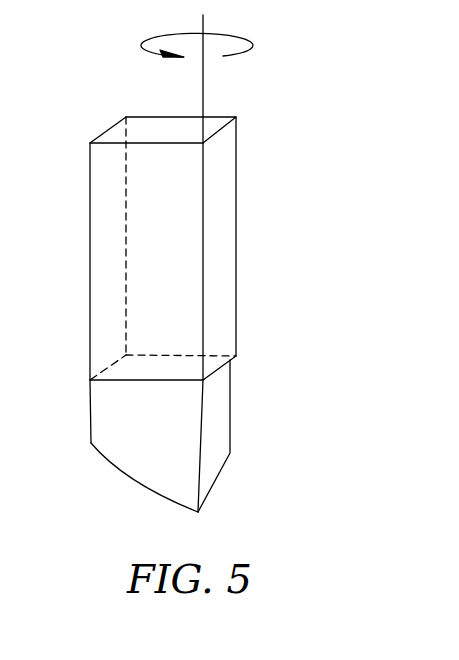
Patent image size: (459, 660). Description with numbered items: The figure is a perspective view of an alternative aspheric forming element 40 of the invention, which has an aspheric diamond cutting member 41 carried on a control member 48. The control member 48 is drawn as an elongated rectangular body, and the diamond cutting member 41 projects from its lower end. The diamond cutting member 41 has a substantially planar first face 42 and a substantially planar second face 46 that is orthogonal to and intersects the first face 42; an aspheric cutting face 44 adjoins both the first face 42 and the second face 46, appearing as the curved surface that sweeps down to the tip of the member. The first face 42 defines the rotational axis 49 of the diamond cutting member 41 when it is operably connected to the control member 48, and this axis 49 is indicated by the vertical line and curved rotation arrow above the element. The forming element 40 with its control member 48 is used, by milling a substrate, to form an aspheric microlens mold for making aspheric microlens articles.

The aspheric forming element 40 is at (108, 72).
The aspheric diamond cutting member 41 is at (112, 420).
The first face 42 is at (215, 455).
The aspheric cutting face 44 is at (137, 470).
The second face 46 is at (118, 374).
The control member 48 is at (147, 229).
The rotational axis 49 is at (203, 87).